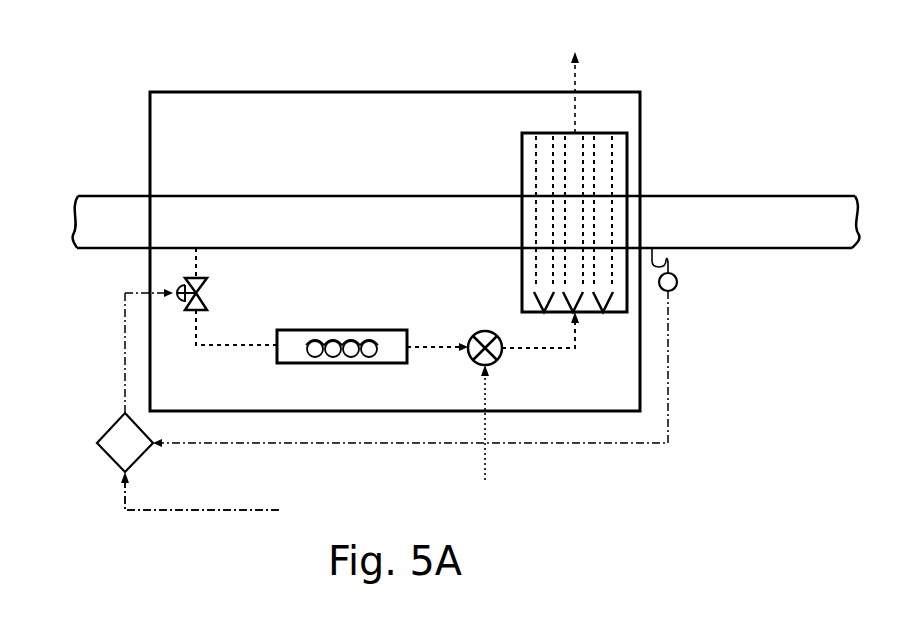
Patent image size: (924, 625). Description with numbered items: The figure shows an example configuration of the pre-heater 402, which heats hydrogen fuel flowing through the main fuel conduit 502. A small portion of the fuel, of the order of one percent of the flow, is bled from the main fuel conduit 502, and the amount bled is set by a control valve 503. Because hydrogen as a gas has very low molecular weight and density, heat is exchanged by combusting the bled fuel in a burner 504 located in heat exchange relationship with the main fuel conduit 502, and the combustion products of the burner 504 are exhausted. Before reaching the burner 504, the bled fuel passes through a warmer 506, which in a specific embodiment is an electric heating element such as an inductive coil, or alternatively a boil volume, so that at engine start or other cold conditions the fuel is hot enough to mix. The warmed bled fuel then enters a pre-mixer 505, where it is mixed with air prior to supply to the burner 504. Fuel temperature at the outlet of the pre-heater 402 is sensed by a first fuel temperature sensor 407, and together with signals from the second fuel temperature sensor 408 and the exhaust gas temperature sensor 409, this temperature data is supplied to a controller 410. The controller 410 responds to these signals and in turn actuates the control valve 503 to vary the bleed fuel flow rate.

The pre-heater 402 is at (170, 92).
The main fuel conduit 502 is at (250, 196).
The burner 504 is at (530, 133).
The control valve 503 is at (205, 282).
The pre-mixer 505 is at (480, 332).
The warmer 506 is at (277, 355).
The first fuel temperature sensor 407 is at (677, 283).
The controller 410 is at (110, 450).
The second fuel temperature sensor 408 is at (202, 495).
The exhaust gas temperature sensor 409 is at (202, 495).